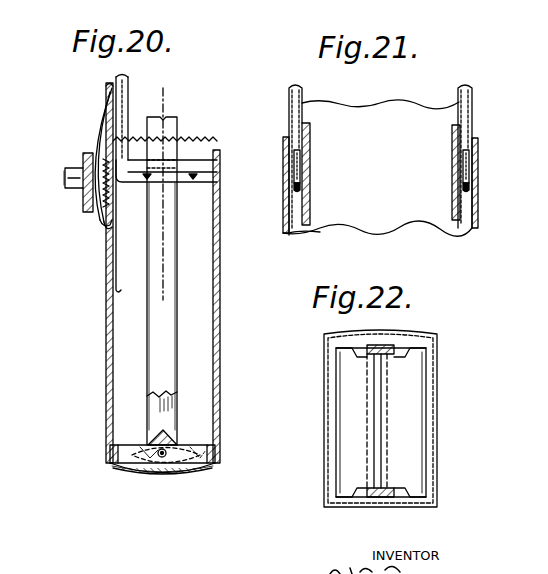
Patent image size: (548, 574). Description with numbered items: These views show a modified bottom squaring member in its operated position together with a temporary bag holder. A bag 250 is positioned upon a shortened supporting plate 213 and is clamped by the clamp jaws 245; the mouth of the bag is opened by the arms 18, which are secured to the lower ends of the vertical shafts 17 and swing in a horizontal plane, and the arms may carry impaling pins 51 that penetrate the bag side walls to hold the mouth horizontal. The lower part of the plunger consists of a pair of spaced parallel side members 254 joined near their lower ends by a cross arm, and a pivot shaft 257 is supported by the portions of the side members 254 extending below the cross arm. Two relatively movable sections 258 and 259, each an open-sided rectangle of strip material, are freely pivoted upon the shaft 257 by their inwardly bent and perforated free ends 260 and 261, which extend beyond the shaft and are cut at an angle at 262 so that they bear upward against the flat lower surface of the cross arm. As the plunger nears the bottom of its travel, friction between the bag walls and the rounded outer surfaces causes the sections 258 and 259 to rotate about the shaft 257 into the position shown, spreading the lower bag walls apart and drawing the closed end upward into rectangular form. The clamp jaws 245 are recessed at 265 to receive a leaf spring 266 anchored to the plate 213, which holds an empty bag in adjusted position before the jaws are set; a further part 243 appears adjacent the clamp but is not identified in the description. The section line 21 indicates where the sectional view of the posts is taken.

In FIG. 21, the vertical shaft 17 is at (292, 95).
In FIG. 20, the arm 18 is at (183, 183).
In FIG. 21, the arm 18 is at (296, 160).
In FIG. 20, the section line 21 is at (163, 88).
In FIG. 21, the impaling pin 51 is at (291, 186).
In FIG. 20, the plate 213 is at (115, 279).
In FIG. 21, the plate 213 is at (358, 106).
In FIG. 20, the screw shaft 243 is at (66, 182).
In FIG. 20, the clamp jaw 245 is at (100, 212).
In FIG. 20, the bag 250 is at (108, 318).
In FIG. 21, the bag 250 is at (380, 229).
In FIG. 22, the bag 250 is at (438, 463).
In FIG. 20, the side member 254 is at (167, 324).
In FIG. 21, the side member 254 is at (311, 140).
In FIG. 22, the side member 254 is at (390, 345).
In FIG. 20, the pivot shaft 257 is at (166, 470).
In FIG. 22, the pivot shaft 257 is at (395, 395).
In FIG. 20, the bottom squaring head section 258 is at (115, 466).
In FIG. 22, the bottom squaring head section 258 is at (334, 395).
In FIG. 20, the bottom squaring head section 259 is at (216, 456).
In FIG. 22, the bottom squaring head section 259 is at (427, 423).
In FIG. 22, the inwardly bent free end 260 is at (337, 353).
In FIG. 22, the inwardly bent free end 261 is at (410, 355).
In FIG. 20, the angular end 262 is at (133, 460).
In FIG. 20, the recess 265 is at (89, 199).
In FIG. 20, the leaf spring 266 is at (97, 136).